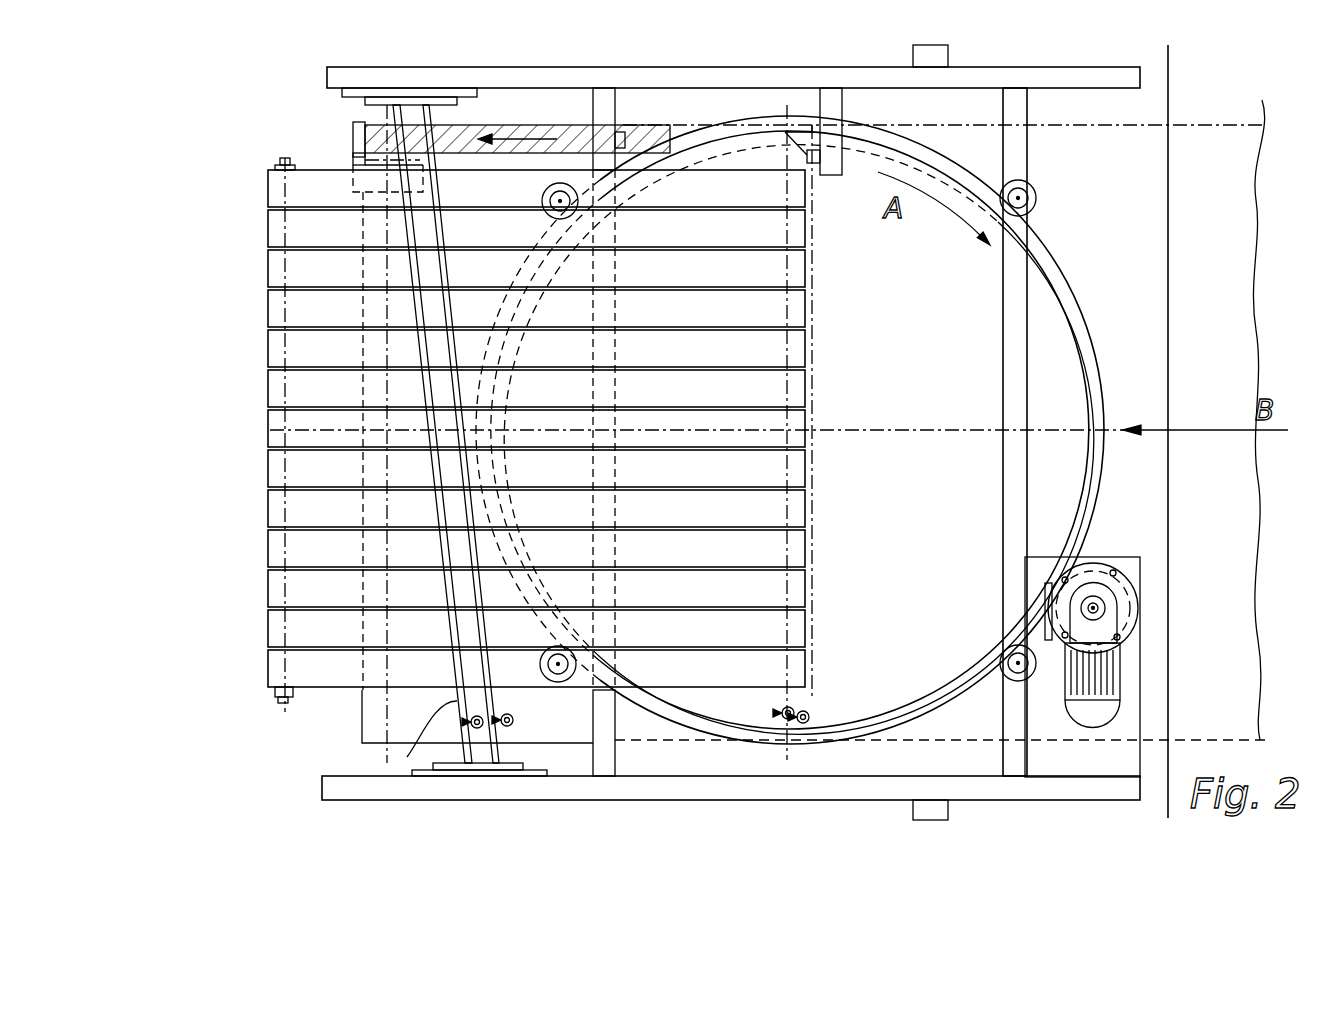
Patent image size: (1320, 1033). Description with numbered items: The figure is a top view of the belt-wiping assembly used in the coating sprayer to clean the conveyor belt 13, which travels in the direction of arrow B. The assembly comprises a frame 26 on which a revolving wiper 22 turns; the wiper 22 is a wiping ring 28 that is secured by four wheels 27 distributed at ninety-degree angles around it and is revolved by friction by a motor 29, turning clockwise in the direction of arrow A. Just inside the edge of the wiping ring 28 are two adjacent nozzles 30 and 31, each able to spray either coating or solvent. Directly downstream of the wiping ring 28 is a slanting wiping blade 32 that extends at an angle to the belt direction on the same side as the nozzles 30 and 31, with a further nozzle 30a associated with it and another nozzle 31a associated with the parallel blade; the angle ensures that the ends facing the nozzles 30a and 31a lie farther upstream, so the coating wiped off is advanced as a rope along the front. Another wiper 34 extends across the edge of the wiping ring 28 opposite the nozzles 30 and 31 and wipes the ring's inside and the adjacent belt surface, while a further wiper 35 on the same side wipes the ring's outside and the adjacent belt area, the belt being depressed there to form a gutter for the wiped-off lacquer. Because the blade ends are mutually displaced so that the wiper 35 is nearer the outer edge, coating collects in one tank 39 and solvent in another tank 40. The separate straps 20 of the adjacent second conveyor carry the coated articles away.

The belt 13 is at (1148, 122).
The straps 20 is at (275, 308).
The wiper 22 is at (880, 703).
The frame 26 is at (457, 67).
The wheels 27 is at (578, 206).
The wiping ring 28 is at (1068, 298).
The motor 29 is at (1130, 588).
The nozzle 30 is at (804, 724).
The nozzle 31 is at (786, 720).
The nozzle 30a is at (512, 727).
The nozzle 31a is at (478, 730).
The wiping blade 32 is at (482, 657).
The wiper 34 is at (818, 150).
The wiper 35 is at (622, 132).
The tank 39 is at (355, 133).
The tank 40 is at (355, 162).